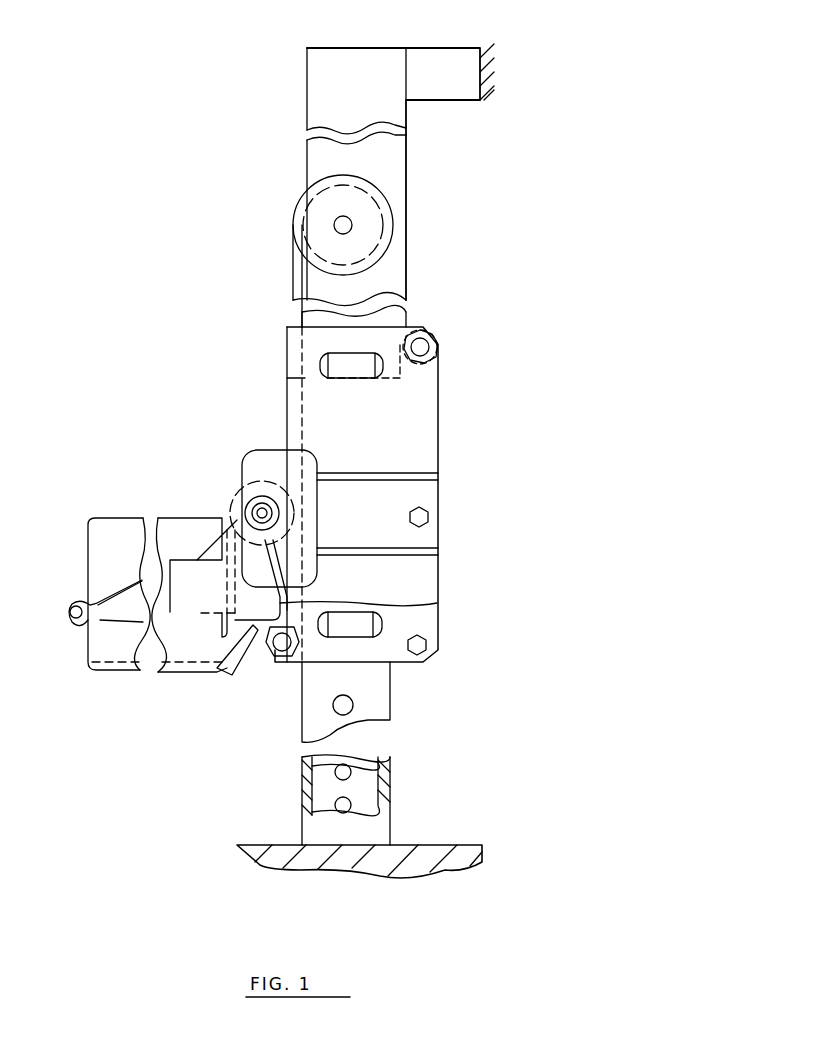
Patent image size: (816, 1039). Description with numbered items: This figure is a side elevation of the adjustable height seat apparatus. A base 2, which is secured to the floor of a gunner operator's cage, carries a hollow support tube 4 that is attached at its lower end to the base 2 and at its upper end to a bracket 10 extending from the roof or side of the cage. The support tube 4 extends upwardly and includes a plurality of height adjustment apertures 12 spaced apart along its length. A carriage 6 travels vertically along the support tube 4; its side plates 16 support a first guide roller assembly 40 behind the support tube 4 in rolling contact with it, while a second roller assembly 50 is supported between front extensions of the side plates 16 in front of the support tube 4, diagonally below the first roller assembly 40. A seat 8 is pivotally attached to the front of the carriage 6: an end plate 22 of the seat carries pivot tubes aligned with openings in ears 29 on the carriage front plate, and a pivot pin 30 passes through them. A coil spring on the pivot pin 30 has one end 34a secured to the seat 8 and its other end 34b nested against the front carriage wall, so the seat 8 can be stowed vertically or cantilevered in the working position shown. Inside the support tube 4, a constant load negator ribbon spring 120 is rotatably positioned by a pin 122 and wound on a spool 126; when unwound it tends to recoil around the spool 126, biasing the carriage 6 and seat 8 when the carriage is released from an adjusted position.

The base 2 is at (443, 845).
The hollow support tube 4 is at (395, 790).
The carriage 6 is at (440, 428).
The seat 8 is at (128, 512).
The bracket 10 is at (437, 60).
The height adjustment apertures 12 is at (335, 800).
The side plates 16 is at (427, 460).
The end plate 22 is at (437, 604).
The ears 29 is at (258, 455).
The pivot pin 30 is at (260, 513).
The spring end 34a is at (226, 672).
The spring end 34b is at (307, 492).
The first guide roller assembly 40 is at (444, 333).
The second roller assembly 50 is at (270, 662).
The negator ribbon spring 120 is at (292, 262).
The pin 122 is at (352, 222).
The spool 126 is at (370, 240).